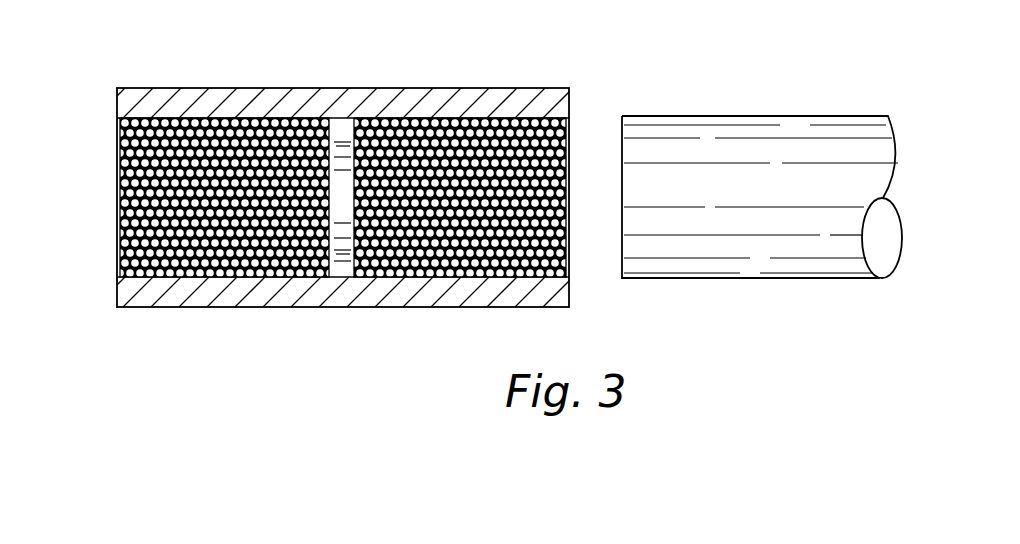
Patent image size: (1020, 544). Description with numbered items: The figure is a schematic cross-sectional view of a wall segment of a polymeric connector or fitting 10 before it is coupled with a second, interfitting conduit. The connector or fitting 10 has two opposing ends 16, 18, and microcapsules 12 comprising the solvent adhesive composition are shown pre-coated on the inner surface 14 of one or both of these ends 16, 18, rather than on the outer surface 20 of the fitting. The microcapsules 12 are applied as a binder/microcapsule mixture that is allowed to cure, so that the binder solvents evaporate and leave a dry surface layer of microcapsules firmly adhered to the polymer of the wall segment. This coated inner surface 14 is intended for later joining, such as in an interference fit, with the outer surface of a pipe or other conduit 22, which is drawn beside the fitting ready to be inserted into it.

The connector or fitting 10 is at (504, 35).
The microcapsules 12 is at (258, 166).
The inner surface 14 is at (190, 214).
The end 16 is at (114, 185).
The end 18 is at (575, 188).
The outer surface 20 is at (152, 88).
The pipe or other conduit 22 is at (748, 115).